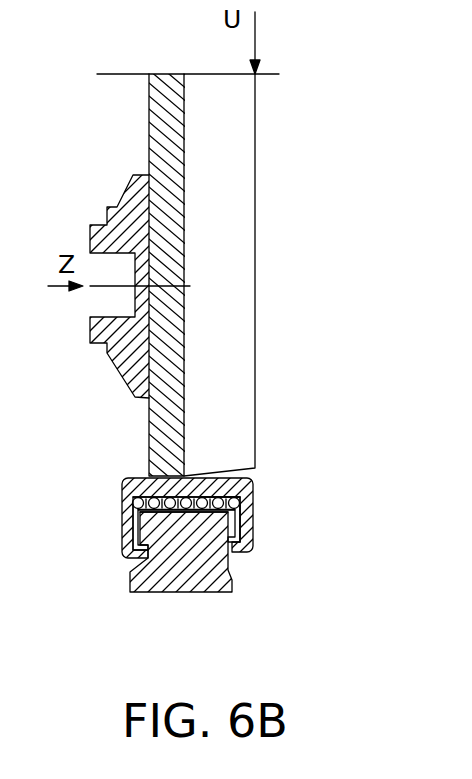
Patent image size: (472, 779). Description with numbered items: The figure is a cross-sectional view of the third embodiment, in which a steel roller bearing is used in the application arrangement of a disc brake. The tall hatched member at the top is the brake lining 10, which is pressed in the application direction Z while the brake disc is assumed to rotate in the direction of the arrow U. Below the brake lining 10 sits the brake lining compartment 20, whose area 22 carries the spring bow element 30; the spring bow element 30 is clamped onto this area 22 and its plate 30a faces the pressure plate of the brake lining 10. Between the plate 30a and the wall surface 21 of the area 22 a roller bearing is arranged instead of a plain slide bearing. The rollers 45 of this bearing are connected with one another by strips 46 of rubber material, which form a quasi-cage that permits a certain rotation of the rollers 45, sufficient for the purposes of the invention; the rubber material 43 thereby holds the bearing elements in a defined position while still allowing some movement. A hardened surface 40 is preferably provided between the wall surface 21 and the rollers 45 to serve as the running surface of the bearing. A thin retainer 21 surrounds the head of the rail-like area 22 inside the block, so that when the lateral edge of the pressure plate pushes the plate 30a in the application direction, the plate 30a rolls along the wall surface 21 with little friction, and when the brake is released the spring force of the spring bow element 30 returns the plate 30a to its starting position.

The brake lining 10 is at (280, 197).
The brake lining compartment 20 is at (262, 596).
The wall surface 21 is at (242, 536).
The area of the brake lining compartment 22 is at (197, 570).
The spring bow element 30 is at (98, 554).
The plate 30a is at (248, 486).
The hardened surface 40 is at (140, 522).
The rubber material 43 is at (137, 504).
The rollers 45 is at (212, 500).
The strips of rubber material 46 is at (153, 500).